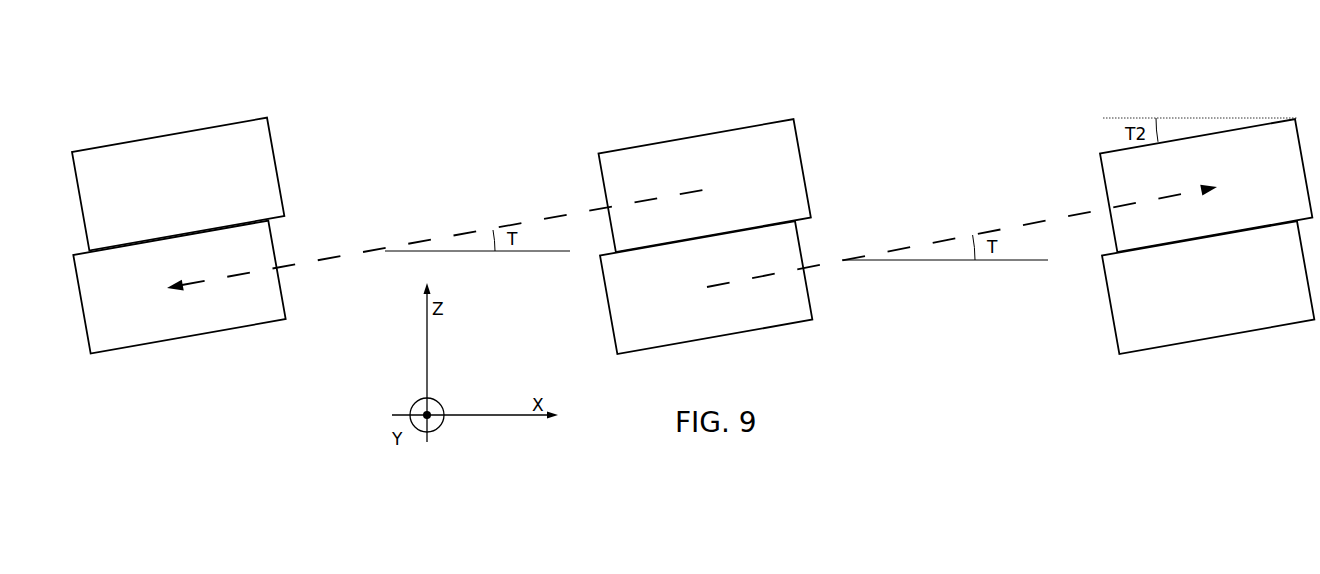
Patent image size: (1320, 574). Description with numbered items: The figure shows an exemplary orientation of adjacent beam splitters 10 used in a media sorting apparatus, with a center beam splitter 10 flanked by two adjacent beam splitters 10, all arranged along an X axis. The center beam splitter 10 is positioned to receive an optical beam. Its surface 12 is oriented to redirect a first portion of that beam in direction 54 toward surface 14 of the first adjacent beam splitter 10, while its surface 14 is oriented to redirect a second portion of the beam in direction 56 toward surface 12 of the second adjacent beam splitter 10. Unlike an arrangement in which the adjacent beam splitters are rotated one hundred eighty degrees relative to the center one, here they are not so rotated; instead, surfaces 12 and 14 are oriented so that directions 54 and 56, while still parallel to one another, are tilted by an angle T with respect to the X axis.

The beam splitter 10 is at (693, 222).
The surface 12 is at (121, 338).
The surface 14 is at (253, 159).
The direction 54 is at (988, 230).
The direction 56 is at (418, 242).